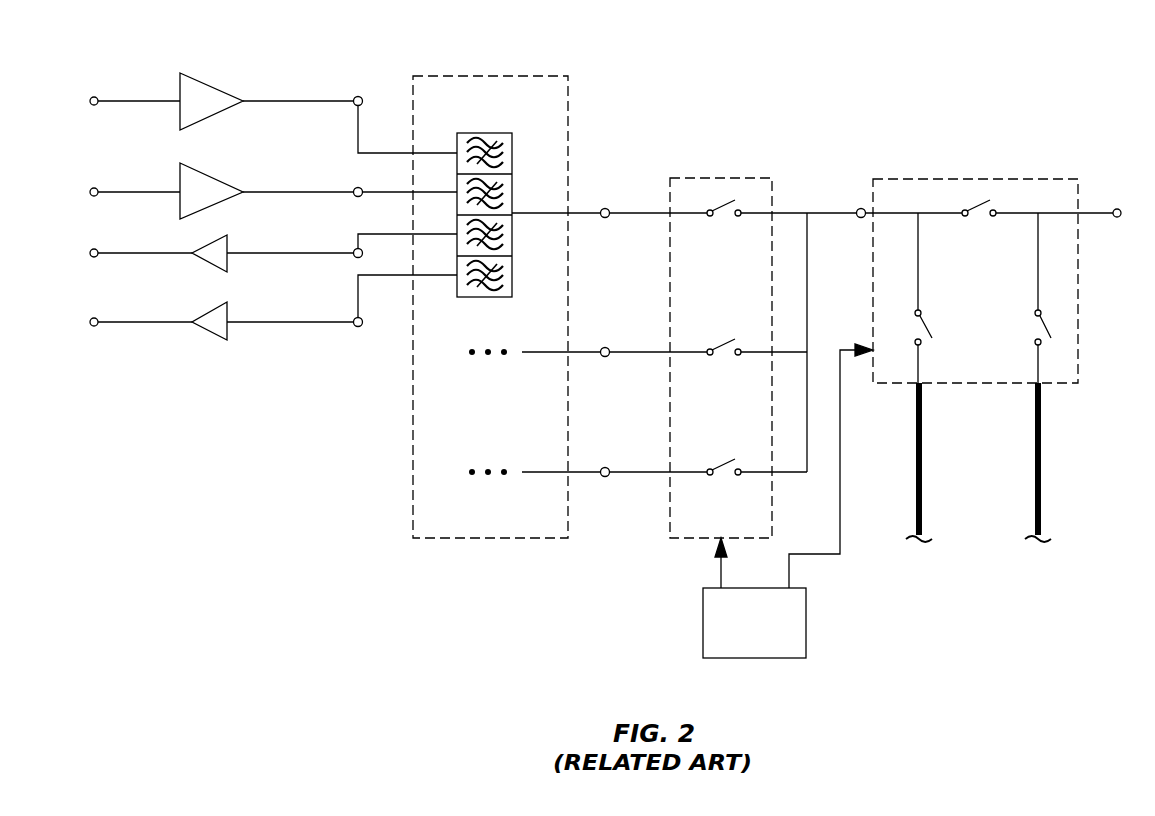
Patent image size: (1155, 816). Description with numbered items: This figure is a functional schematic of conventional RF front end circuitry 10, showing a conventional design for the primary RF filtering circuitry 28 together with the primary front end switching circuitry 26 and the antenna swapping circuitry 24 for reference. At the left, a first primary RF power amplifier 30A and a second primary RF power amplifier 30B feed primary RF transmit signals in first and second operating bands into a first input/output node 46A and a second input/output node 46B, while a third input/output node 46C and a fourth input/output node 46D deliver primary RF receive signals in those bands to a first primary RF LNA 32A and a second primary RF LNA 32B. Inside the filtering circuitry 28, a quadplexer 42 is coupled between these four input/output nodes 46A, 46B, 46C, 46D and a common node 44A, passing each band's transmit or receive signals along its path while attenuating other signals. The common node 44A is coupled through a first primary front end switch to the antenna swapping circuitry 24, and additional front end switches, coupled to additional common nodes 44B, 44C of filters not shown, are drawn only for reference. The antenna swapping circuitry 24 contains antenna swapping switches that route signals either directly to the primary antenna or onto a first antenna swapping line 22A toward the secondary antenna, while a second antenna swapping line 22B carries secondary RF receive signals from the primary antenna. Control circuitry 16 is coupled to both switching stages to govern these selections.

The conventional RF front end circuitry 10 is at (788, 44).
The control circuitry 16 is at (744, 643).
The first antenna swapping line 22A is at (922, 467).
The second antenna swapping line 22B is at (1041, 467).
The antenna swapping circuitry 24 is at (1010, 179).
The primary front end switching circuitry 26 is at (727, 178).
The primary RF filtering circuitry 28 is at (499, 76).
The first primary RF power amplifier 30A is at (213, 108).
The second primary RF power amplifier 30B is at (213, 200).
The first primary RF LNA 32A is at (210, 244).
The second primary RF LNA 32B is at (210, 313).
The quadplexer 42 is at (481, 133).
The common node 44A is at (607, 209).
The additional common node 44B is at (607, 348).
The additional common node 44C is at (607, 468).
The first input/output node 46A is at (355, 98).
The second input/output node 46B is at (355, 189).
The third input/output node 46C is at (355, 250).
The fourth input/output node 46D is at (355, 319).